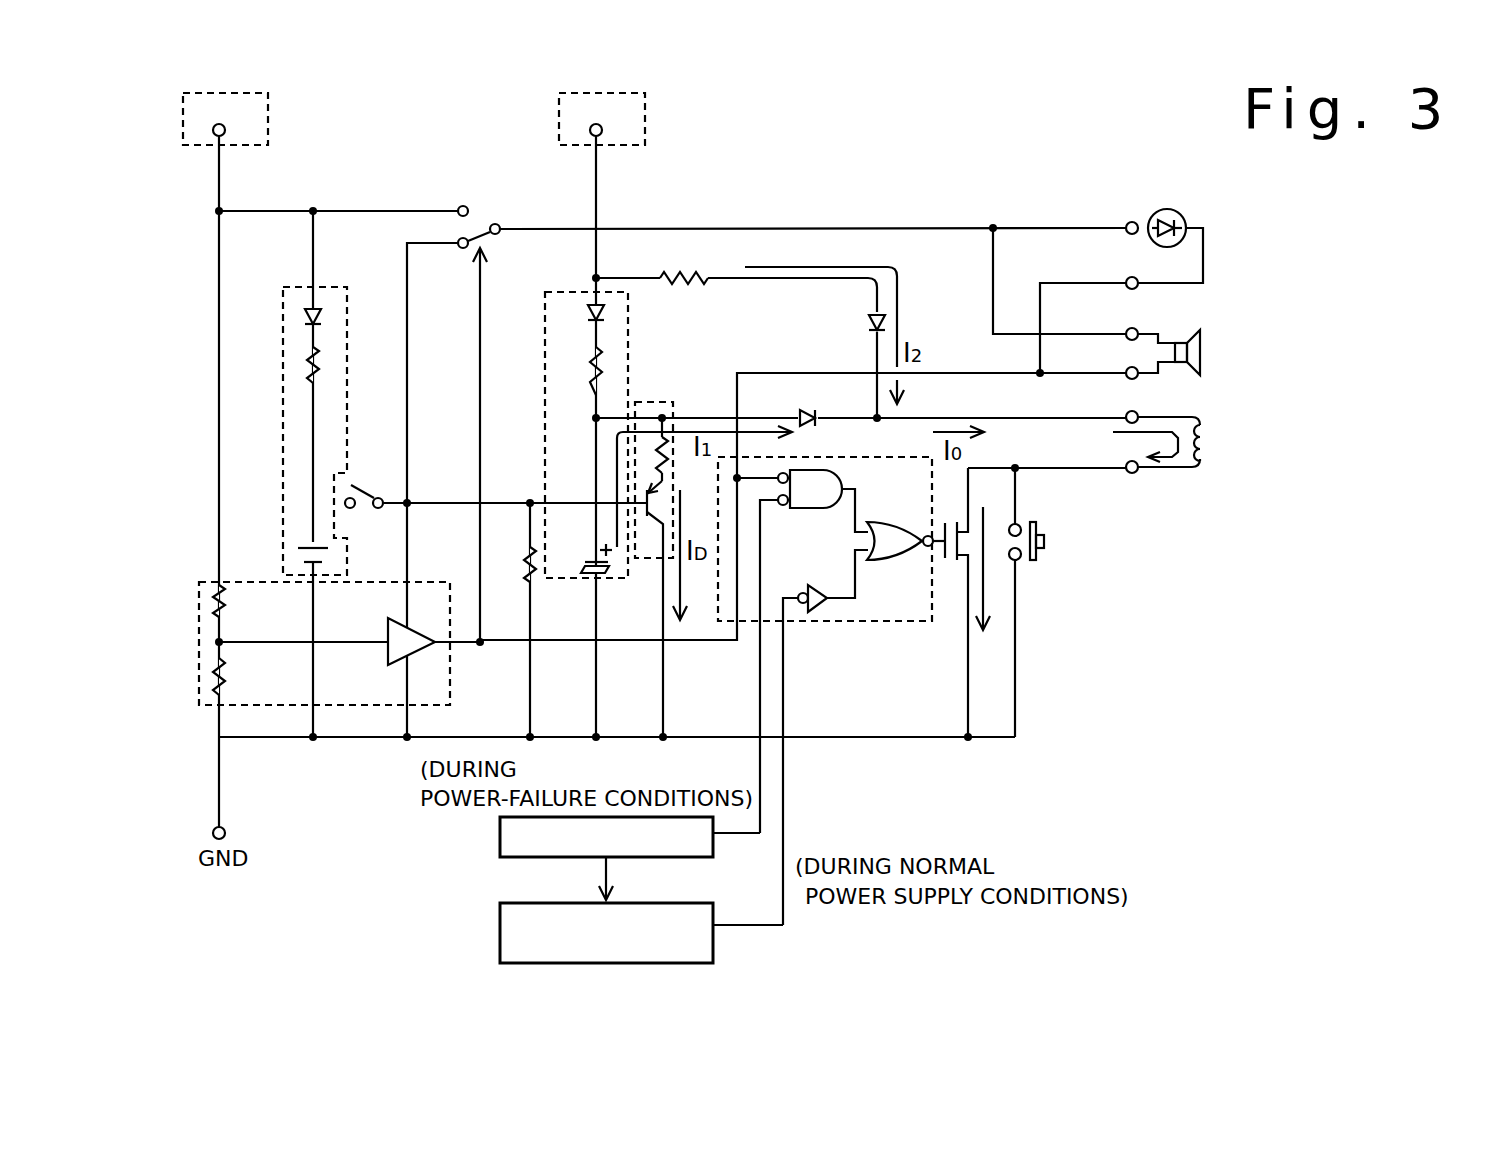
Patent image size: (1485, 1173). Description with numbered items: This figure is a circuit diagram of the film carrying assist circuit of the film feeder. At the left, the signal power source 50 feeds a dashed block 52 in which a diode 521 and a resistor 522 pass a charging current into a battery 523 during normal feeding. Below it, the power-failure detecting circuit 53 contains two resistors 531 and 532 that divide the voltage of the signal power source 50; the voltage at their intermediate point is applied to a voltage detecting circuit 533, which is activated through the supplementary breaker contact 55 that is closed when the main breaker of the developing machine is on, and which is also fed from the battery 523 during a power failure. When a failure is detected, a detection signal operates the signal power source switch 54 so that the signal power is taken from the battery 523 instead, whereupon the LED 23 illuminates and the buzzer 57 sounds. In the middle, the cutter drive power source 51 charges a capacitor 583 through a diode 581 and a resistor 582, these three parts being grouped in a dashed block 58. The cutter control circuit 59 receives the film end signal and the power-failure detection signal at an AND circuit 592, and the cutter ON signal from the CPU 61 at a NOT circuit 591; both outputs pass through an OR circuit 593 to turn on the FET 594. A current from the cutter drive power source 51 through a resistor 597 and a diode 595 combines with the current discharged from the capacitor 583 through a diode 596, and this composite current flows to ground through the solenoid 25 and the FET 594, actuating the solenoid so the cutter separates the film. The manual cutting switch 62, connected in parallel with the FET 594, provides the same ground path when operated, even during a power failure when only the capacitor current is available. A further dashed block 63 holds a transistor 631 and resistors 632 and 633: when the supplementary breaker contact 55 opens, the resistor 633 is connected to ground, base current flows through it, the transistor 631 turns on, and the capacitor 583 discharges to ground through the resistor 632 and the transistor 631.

The LED 23 is at (1188, 222).
The solenoid 25 is at (1205, 425).
The signal power source 50 is at (270, 112).
The cutter drive power source 51 is at (646, 112).
The backup battery circuit 52 is at (328, 292).
The diode 521 is at (322, 317).
The resistor 522 is at (322, 365).
The battery 523 is at (330, 555).
The power-failure detecting circuit 53 is at (358, 698).
The resistor 531 is at (230, 609).
The resistor 532 is at (230, 686).
The voltage detecting circuit 533 is at (388, 640).
The signal power source switch 54 is at (492, 225).
The supplementary breaker contact 55 is at (378, 485).
The buzzer 57 is at (1205, 340).
The power holding circuit 58 is at (558, 307).
The diode 581 is at (607, 313).
The resistor 582 is at (612, 360).
The capacitor 583 is at (608, 577).
The cutter control circuit 59 is at (888, 625).
The NOT circuit 591 is at (822, 615).
The AND circuit 592 is at (810, 510).
The OR circuit 593 is at (888, 518).
The FET 594 is at (947, 565).
The diode 595 is at (884, 322).
The diode 596 is at (806, 408).
The resistor 597 is at (683, 267).
The CPU 61 is at (500, 920).
The manual cutting switch 62 is at (1030, 565).
The constant current circuit 63 is at (663, 406).
The transistor 631 is at (648, 495).
The resistor 632 is at (667, 447).
The resistor 633 is at (535, 578).